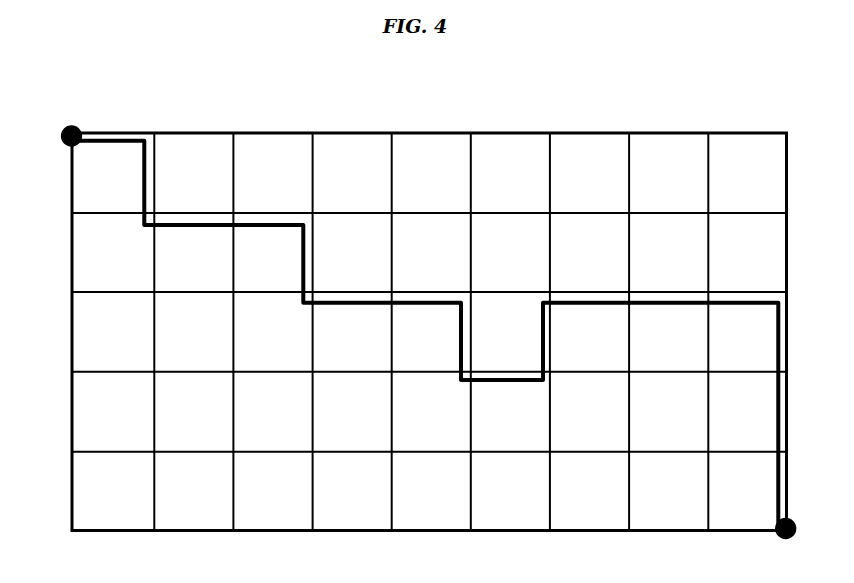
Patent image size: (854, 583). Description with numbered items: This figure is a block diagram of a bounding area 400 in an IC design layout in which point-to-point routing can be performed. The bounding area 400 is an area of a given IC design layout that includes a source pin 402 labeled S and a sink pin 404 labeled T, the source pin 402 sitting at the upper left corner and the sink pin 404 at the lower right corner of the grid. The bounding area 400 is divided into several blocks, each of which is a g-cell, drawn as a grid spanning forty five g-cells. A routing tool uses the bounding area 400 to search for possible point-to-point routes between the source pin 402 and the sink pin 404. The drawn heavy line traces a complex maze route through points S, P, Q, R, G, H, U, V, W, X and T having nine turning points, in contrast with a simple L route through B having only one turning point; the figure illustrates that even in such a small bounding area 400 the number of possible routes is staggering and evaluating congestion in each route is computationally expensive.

The bounding area 400 is at (688, 100).
The source pin 402 is at (113, 104).
The sink pin 404 is at (798, 568).